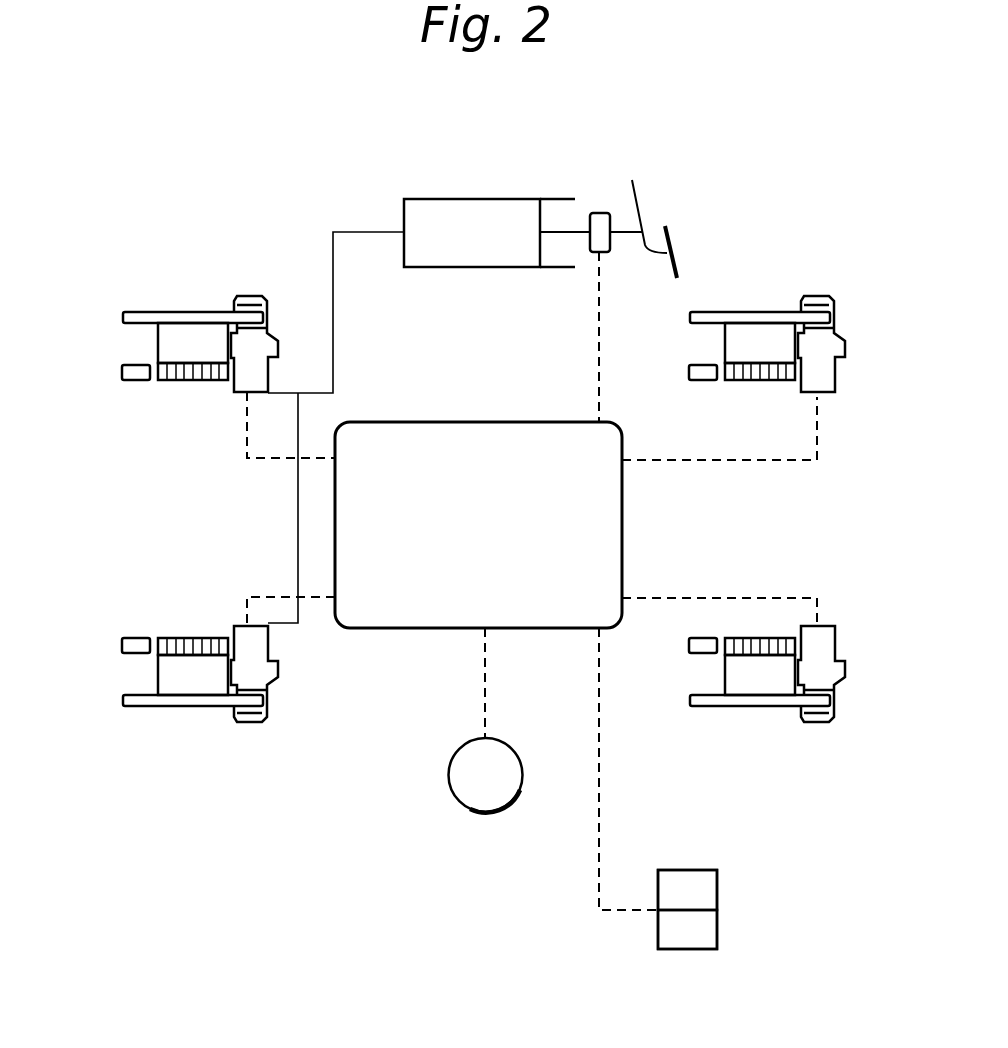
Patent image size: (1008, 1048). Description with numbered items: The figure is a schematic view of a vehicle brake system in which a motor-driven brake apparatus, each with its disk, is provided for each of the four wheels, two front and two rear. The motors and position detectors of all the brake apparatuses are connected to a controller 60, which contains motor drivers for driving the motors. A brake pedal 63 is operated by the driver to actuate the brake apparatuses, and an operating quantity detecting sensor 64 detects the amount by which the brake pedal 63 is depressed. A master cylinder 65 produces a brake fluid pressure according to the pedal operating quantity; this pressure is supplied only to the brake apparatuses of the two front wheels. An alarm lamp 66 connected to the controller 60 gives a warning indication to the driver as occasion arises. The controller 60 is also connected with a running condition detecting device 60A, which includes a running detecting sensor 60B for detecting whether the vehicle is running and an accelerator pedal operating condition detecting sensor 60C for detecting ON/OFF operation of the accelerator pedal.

The controller 60 is at (403, 628).
The running condition detecting device 60A is at (652, 937).
The running detecting sensor 60B is at (705, 890).
The accelerator pedal operating condition detecting sensor 60C is at (705, 932).
The brake pedal 63 is at (670, 234).
The operating quantity detecting sensor 64 is at (600, 213).
The master cylinder 65 is at (490, 199).
The alarm lamp 66 is at (512, 760).